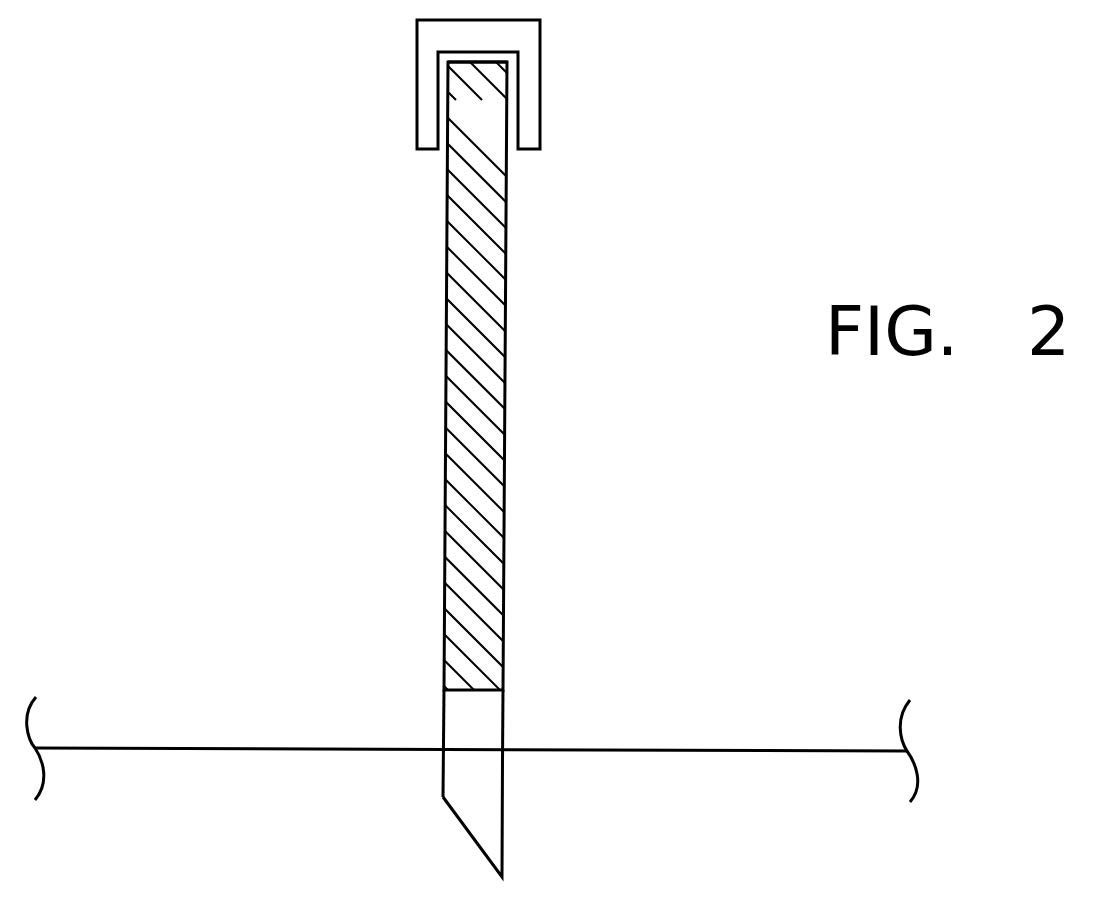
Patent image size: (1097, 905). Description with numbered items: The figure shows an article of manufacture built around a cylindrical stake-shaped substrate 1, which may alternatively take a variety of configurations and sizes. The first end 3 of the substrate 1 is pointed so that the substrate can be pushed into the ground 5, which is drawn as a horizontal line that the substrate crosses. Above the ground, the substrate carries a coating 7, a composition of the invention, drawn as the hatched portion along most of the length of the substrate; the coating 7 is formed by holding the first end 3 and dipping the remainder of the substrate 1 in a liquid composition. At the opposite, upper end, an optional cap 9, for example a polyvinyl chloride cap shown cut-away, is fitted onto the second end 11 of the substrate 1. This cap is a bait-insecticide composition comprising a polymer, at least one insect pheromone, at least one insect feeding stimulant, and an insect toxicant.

The substrate 1 is at (468, 720).
The first end of substrate 3 is at (487, 808).
The ground 5 is at (708, 747).
The coating 7 is at (483, 368).
The cap 9 is at (530, 112).
The second end of substrate 11 is at (476, 100).